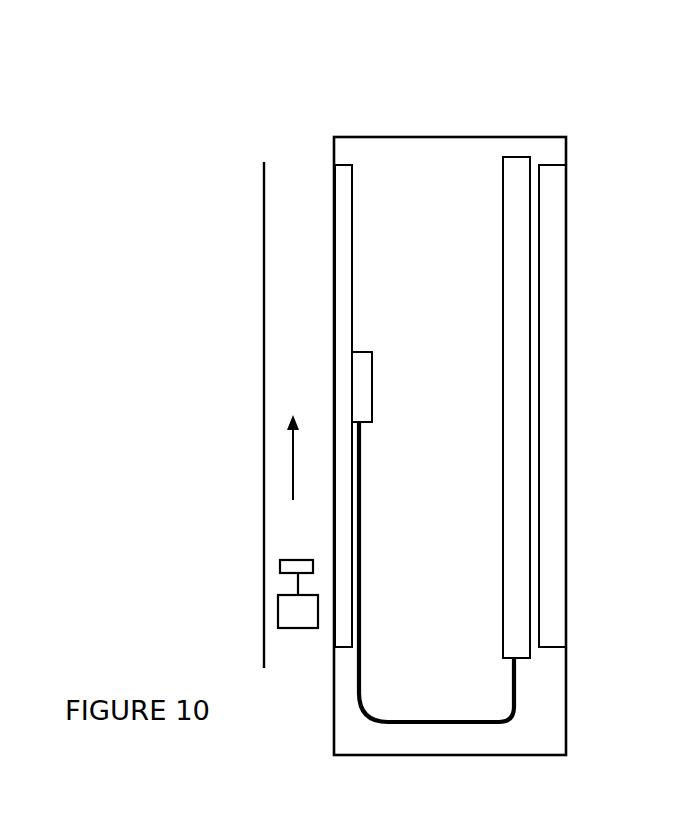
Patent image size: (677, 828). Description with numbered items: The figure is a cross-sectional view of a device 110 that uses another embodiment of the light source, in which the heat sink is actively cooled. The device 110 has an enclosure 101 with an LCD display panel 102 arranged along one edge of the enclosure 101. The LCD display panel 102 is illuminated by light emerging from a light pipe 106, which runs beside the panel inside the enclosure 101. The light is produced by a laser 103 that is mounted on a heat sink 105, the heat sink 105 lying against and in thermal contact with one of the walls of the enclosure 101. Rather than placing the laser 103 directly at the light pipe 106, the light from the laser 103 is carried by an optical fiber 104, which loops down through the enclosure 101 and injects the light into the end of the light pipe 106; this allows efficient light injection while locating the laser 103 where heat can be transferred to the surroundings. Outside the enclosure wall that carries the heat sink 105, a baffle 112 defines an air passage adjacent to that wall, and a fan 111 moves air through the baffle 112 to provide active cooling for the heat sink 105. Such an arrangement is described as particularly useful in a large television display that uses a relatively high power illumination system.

The device 110 is at (172, 82).
The enclosure 101 is at (432, 137).
The LCD display panel 102 is at (545, 365).
The laser 103 is at (372, 392).
The optical fiber 104 is at (426, 722).
The heat sink 105 is at (341, 291).
The light pipe 106 is at (511, 229).
The fan 111 is at (296, 630).
The baffle 112 is at (263, 239).